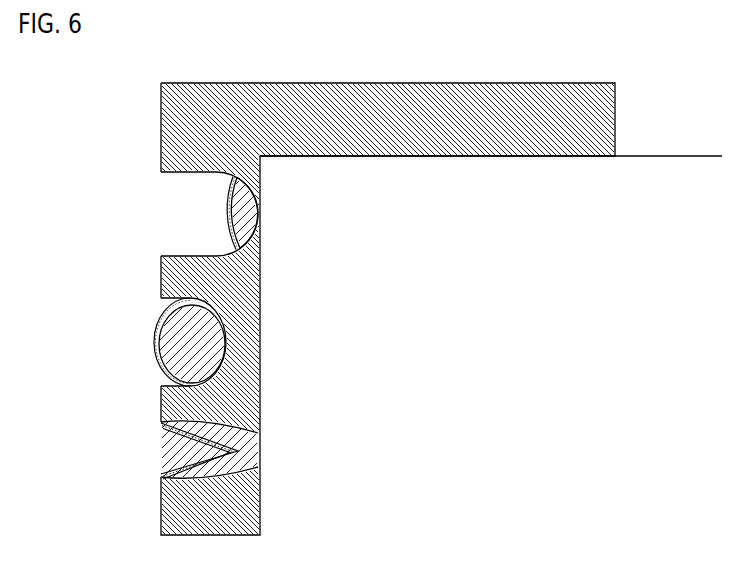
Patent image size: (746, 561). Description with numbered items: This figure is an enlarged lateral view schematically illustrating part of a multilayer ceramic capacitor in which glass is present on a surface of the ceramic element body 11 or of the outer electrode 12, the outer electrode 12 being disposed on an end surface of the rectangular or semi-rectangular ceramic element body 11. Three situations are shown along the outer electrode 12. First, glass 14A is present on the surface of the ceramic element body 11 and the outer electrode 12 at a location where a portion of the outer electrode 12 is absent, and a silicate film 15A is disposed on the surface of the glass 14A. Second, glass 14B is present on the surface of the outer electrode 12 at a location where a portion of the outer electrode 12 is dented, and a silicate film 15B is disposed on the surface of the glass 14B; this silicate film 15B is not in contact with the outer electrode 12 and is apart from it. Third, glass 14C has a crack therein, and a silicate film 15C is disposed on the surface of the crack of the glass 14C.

The ceramic element body 11 is at (647, 190).
The outer electrode 12 is at (468, 112).
The glass 14A is at (245, 222).
The silicate film 15A is at (229, 204).
The glass 14B is at (172, 349).
The silicate film 15B is at (155, 327).
The glass 14C is at (188, 479).
The silicate film 15C is at (196, 441).